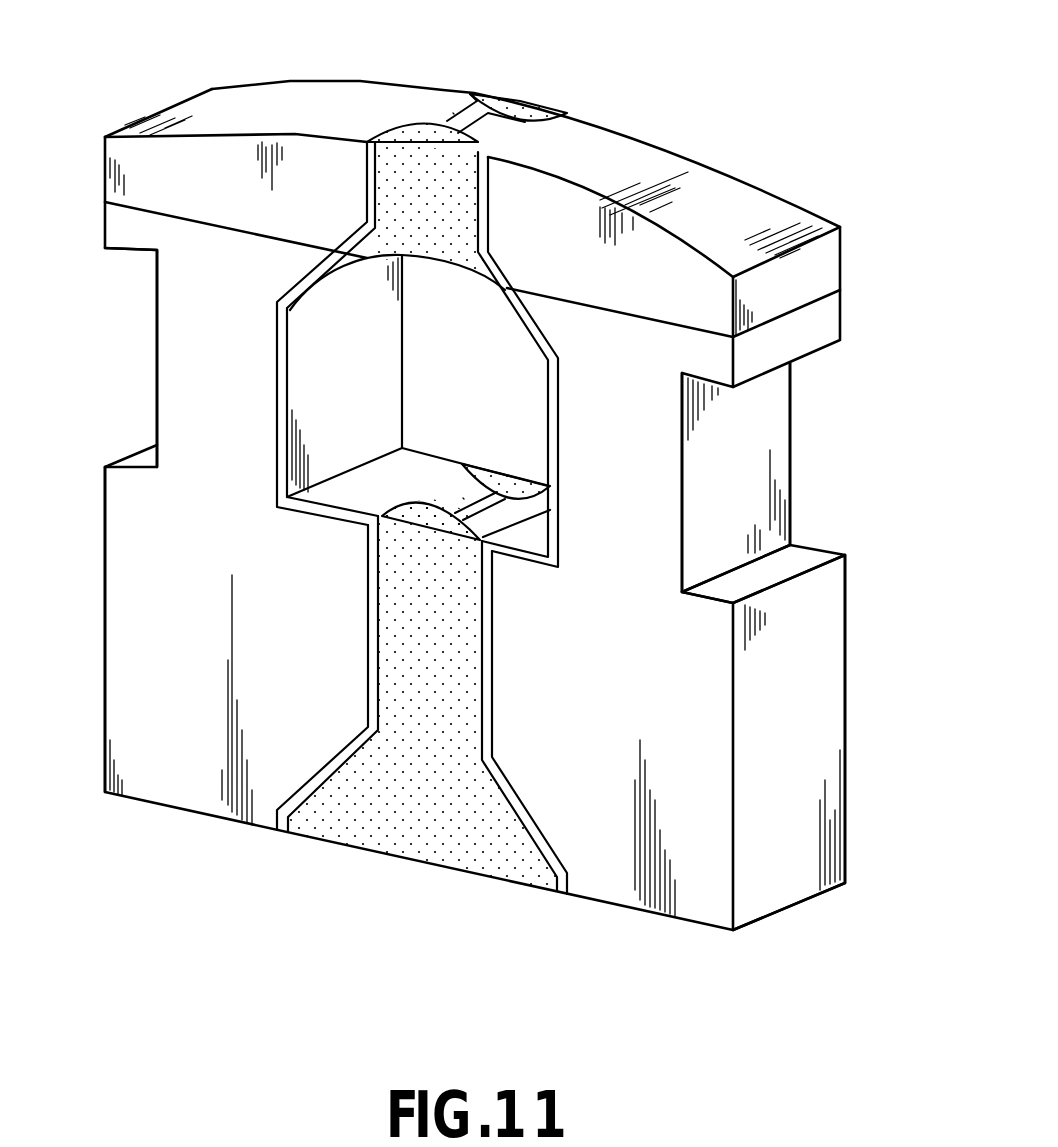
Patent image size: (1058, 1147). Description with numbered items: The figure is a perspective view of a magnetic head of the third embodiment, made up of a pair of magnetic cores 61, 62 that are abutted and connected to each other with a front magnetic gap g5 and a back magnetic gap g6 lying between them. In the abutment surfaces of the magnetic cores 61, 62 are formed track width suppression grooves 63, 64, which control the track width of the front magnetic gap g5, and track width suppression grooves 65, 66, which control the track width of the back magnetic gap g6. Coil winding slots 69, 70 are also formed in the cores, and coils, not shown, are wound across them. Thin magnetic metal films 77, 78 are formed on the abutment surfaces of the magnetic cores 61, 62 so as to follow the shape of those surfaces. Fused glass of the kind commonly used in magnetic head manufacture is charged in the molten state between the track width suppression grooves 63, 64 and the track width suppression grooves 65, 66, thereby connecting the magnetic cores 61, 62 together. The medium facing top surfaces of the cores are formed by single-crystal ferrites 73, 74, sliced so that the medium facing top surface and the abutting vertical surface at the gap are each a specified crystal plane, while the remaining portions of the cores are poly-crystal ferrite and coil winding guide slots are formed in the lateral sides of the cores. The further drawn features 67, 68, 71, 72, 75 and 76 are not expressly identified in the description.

The magnetic core 61 is at (828, 508).
The magnetic core 62 is at (100, 458).
The track width suppression groove 63 is at (540, 113).
The track width suppression groove 64 is at (396, 134).
The track width suppression groove 65 is at (528, 474).
The track width suppression groove 66 is at (470, 464).
The first gap filler 67 is at (448, 252).
The second gap filler 68 is at (408, 846).
The coil winding slot 69 is at (558, 424).
The coil winding slot 70 is at (282, 404).
The right recess 71 is at (770, 416).
The left recess 72 is at (152, 300).
The single-crystal ferrite 73 is at (735, 178).
The single-crystal ferrite 74 is at (232, 96).
The right side surface 75 is at (835, 727).
The left side surface 76 is at (118, 722).
The thin magnetic metal film 77 is at (562, 884).
The thin magnetic metal film 78 is at (285, 832).
The magnetic gap g5 is at (448, 106).
The magnetic gap g6 is at (450, 488).